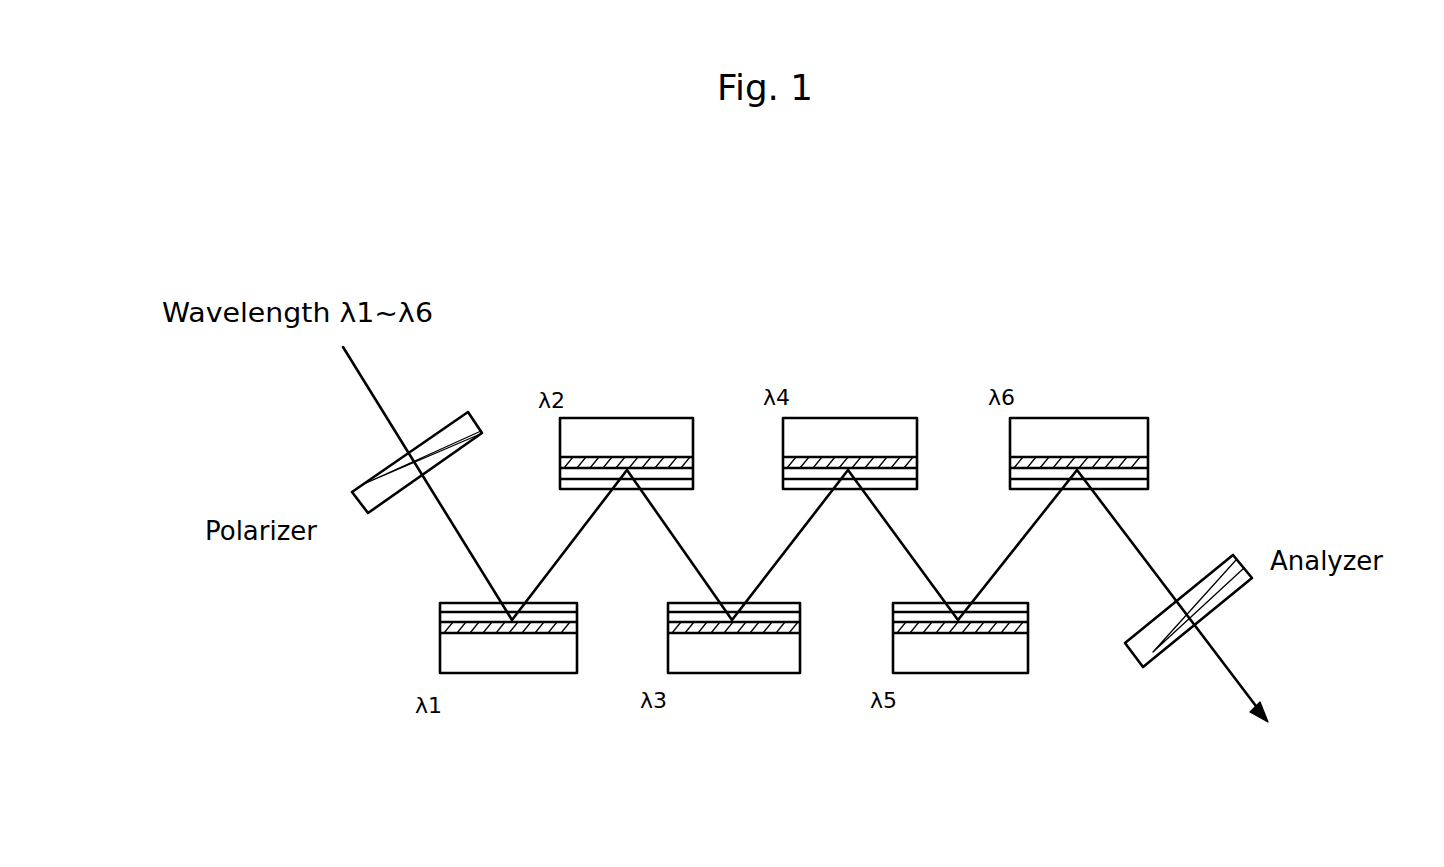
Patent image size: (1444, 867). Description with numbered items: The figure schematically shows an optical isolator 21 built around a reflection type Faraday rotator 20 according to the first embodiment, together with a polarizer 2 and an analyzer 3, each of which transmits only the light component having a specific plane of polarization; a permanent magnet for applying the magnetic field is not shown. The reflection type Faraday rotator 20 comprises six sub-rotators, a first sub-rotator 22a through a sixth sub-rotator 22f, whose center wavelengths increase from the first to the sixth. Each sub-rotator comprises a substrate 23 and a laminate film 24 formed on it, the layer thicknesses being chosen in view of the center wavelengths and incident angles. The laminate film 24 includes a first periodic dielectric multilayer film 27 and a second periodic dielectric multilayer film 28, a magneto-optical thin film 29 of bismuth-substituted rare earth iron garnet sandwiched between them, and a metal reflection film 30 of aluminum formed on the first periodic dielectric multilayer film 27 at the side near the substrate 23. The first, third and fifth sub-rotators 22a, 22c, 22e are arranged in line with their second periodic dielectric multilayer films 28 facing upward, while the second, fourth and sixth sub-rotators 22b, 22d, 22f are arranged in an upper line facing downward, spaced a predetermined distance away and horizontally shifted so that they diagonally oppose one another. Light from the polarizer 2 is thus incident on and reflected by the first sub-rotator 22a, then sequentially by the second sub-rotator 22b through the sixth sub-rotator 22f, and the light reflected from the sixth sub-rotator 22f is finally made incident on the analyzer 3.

The polarizer 2 is at (407, 485).
The analyzer 3 is at (1277, 602).
The reflection type Faraday rotator 20 is at (1084, 229).
The optical isolator 21 is at (1203, 196).
The first sub-rotator 22a is at (500, 722).
The second sub-rotator 22b is at (634, 357).
The third sub-rotator 22c is at (739, 702).
The fourth sub-rotator 22d is at (861, 368).
The fifth sub-rotator 22e is at (973, 701).
The sixth sub-rotator 22f is at (1098, 371).
The substrate 23 is at (452, 655).
The laminate film 24 is at (584, 602).
The first periodic dielectric multilayer film 27 is at (440, 623).
The second periodic dielectric multilayer film 28 is at (440, 606).
The magneto-optical thin film 29 is at (440, 612).
The metal reflection film 30 is at (440, 629).